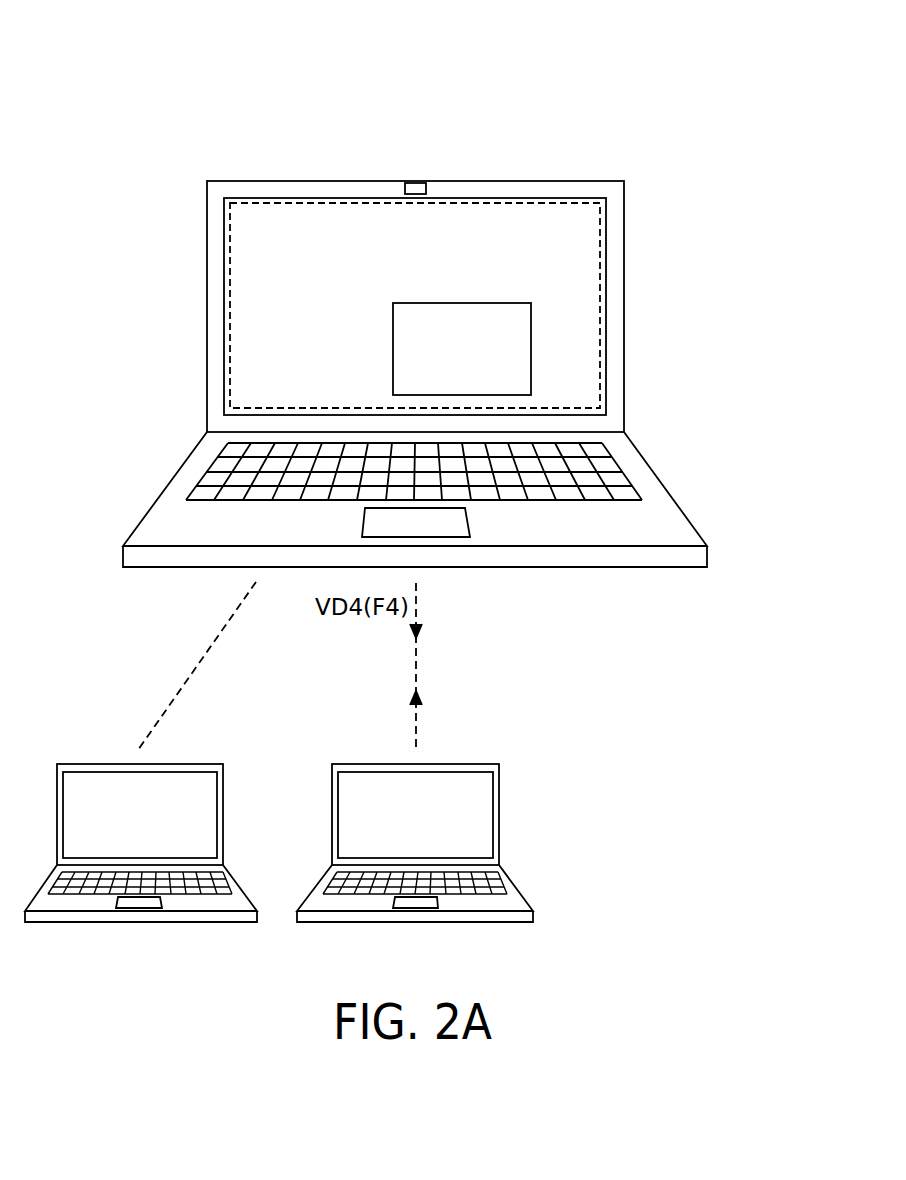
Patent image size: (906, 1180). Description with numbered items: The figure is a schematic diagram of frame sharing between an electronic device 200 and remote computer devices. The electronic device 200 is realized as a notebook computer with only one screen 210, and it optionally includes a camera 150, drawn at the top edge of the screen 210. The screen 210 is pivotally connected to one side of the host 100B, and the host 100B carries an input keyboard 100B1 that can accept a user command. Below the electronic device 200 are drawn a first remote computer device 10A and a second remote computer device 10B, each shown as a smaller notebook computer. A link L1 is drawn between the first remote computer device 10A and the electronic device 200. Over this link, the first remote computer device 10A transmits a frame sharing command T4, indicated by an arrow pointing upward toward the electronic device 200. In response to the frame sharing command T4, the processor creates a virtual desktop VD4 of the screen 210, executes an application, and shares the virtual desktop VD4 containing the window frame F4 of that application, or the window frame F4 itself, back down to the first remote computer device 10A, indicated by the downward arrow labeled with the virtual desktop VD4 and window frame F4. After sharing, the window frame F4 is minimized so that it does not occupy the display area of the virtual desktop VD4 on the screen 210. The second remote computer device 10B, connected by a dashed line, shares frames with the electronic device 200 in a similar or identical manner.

The electronic device 200 is at (233, 66).
The host 100B is at (693, 525).
The input keyboard 100B1 is at (622, 472).
The screen 210 is at (624, 224).
The camera 150 is at (418, 181).
The virtual desktop VD4 is at (506, 203).
The window frame F4 is at (531, 348).
The link L1 is at (418, 668).
The frame sharing command T4 is at (444, 715).
The first remote computer device 10A is at (500, 800).
The second remote computer device 10B is at (192, 764).